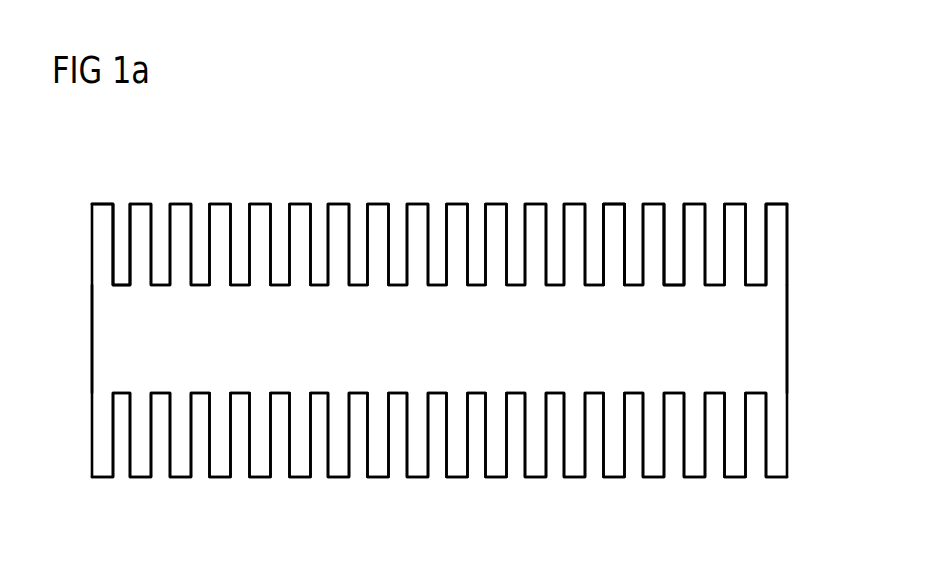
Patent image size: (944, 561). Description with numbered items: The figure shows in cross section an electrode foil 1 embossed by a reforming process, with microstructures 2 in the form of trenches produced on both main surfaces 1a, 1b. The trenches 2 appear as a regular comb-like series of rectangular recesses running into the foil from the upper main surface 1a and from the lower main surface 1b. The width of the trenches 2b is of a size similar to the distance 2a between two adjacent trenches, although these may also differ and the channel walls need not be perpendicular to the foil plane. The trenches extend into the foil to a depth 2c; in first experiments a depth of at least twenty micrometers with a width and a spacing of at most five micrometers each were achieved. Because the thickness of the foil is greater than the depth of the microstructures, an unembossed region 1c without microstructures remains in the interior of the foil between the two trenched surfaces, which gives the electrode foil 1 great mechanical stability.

The electrode foil 1 is at (802, 349).
The main surface 1a is at (212, 175).
The main surface 1b is at (764, 486).
The unembossed region in the interior of the foil 1c is at (83, 282).
The microstructures 2 is at (120, 252).
The distance between two adjacent trenches 2a is at (627, 199).
The width of the trenches 2b is at (689, 199).
The depth of the trenches 2c is at (792, 203).